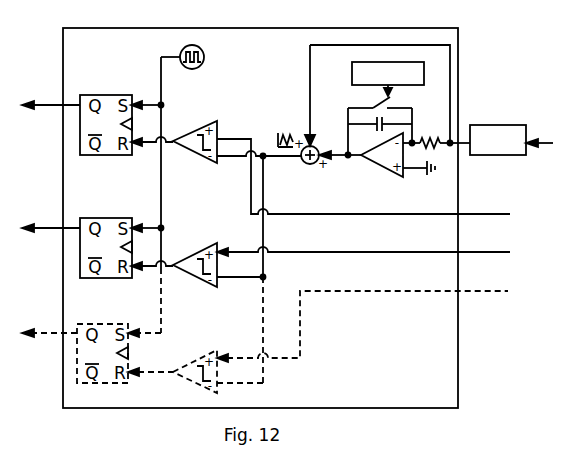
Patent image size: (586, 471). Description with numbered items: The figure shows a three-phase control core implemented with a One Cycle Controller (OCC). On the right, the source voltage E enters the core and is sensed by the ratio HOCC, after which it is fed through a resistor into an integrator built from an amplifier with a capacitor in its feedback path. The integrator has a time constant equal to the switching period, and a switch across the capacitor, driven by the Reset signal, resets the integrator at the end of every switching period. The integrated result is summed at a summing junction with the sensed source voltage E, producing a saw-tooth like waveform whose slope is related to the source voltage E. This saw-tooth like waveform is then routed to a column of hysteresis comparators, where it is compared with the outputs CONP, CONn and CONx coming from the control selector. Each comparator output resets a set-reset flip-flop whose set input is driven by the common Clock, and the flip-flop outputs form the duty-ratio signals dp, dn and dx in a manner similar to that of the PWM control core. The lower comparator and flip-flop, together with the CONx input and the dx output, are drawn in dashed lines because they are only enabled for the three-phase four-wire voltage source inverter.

The clock Clock is at (209, 57).
The reset Reset is at (388, 79).
The sensing ratio H_occ HOCC is at (498, 140).
The source voltage E is at (545, 143).
The duty-ratio signal d_p dp is at (51, 92).
The duty-ratio signal d_n dn is at (51, 217).
The duty-ratio signal d_x dx is at (49, 316).
The control selector output CON_p CONP is at (533, 216).
The control selector output CON_n CONn is at (533, 254).
The control selector output CON_x CONx is at (531, 293).